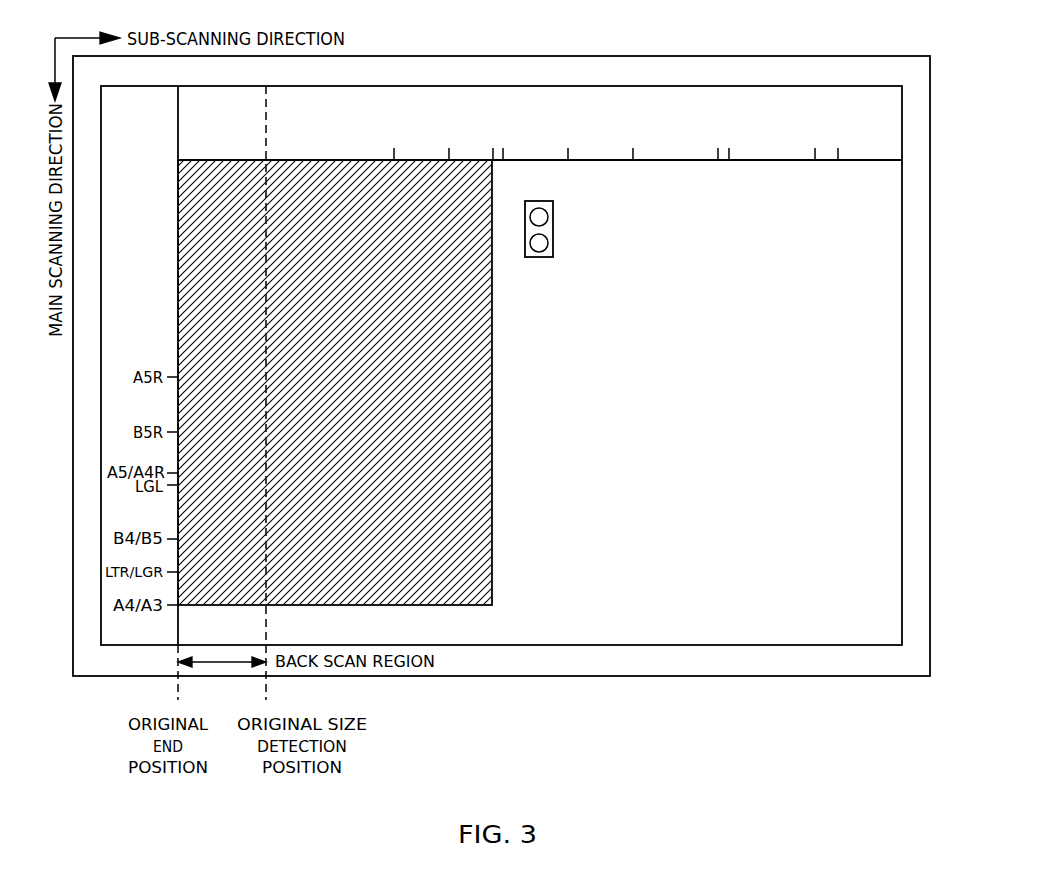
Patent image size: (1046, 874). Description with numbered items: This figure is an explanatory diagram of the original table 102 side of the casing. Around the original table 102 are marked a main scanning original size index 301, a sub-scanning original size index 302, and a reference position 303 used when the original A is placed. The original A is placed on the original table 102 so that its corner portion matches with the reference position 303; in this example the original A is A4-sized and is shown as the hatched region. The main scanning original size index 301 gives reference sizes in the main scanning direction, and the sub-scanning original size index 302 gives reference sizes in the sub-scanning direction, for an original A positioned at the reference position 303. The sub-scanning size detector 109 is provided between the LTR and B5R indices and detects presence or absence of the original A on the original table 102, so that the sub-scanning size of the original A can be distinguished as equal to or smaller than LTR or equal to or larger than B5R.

The main scanning original size index 301 is at (100, 387).
The sub-scanning original size index 302 is at (902, 136).
The reference position 303 is at (166, 154).
The original table 102 is at (887, 302).
The sub-scanning size detector 109 is at (553, 240).
The original A is at (484, 470).